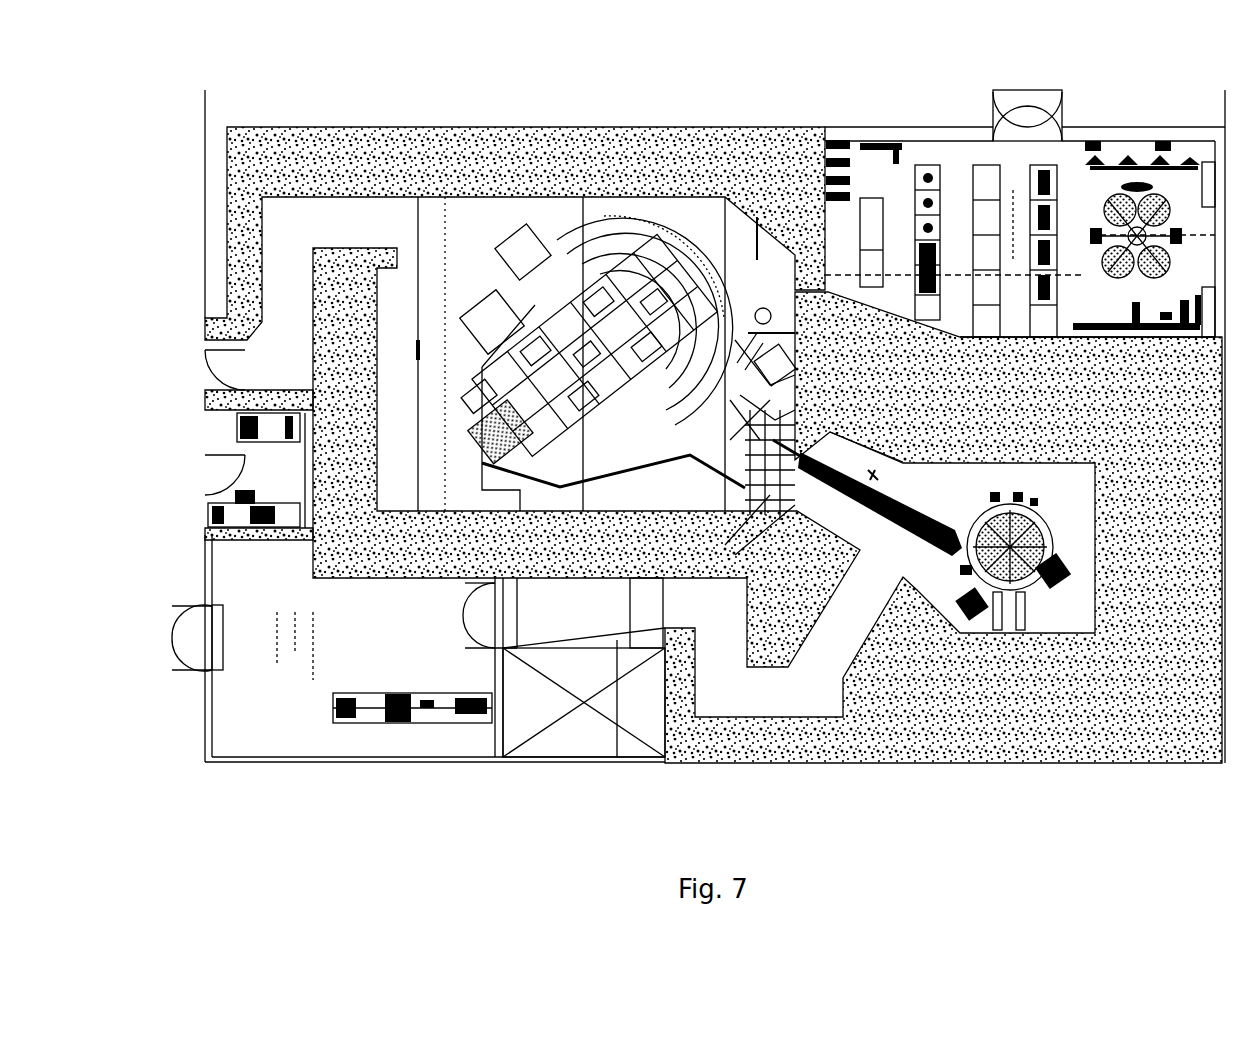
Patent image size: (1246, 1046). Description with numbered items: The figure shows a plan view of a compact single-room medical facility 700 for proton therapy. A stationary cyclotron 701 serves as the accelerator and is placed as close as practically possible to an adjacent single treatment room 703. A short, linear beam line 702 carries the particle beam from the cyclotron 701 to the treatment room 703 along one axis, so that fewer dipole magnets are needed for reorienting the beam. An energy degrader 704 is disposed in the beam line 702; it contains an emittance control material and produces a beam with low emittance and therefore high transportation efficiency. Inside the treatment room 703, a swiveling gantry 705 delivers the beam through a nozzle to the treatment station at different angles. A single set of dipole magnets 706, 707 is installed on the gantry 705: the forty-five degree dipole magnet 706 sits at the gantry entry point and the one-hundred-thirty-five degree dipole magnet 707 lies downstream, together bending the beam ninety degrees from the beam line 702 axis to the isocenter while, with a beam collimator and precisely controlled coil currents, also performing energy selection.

The medical facility 700 is at (1198, 45).
The cyclotron 701 is at (1068, 505).
The beam line 702 is at (930, 494).
The single treatment room 703 is at (483, 247).
The energy degrader 704 is at (875, 475).
The swiveling gantry 705 is at (710, 325).
The 45° dipole magnet 706 is at (727, 417).
The 135° dipole magnet 707 is at (642, 238).